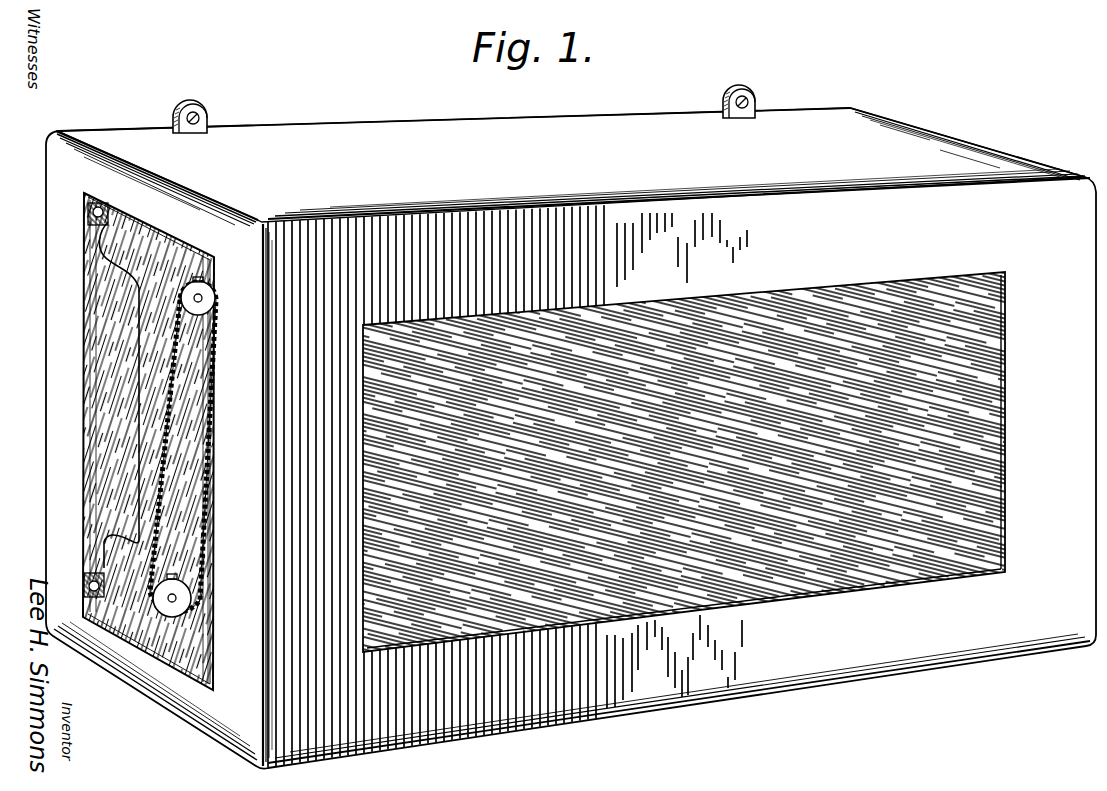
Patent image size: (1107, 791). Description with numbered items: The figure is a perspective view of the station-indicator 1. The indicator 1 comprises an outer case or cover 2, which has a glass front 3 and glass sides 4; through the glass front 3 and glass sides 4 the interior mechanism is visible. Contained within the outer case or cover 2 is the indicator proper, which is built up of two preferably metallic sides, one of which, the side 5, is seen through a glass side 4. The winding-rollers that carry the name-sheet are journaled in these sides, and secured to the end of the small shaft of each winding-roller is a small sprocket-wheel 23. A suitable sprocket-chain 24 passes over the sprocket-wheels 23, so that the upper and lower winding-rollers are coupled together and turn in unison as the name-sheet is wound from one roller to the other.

The indicator 1 is at (571, 425).
The outer case or cover 2 is at (946, 156).
The glass front 3 is at (830, 303).
The glass sides 4 is at (110, 365).
The side 5 is at (150, 427).
The sprocket-wheel 23 is at (200, 311).
The sprocket-chain 24 is at (210, 533).